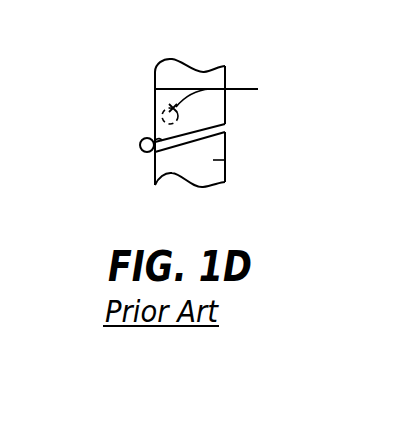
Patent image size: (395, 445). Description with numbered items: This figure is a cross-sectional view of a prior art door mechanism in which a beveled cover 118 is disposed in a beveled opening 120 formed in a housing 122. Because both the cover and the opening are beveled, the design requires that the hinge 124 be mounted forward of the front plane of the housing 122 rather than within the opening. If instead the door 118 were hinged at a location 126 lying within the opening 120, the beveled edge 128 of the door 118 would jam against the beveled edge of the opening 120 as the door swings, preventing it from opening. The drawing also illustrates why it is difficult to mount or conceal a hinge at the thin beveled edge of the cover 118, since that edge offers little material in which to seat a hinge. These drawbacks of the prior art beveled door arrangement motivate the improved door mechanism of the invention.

The beveled cover 118 is at (155, 89).
The beveled opening 120 is at (208, 133).
The housing 122 is at (225, 160).
The hinge 124 is at (140, 146).
The location 126 is at (258, 89).
The beveled edge 128 is at (162, 137).